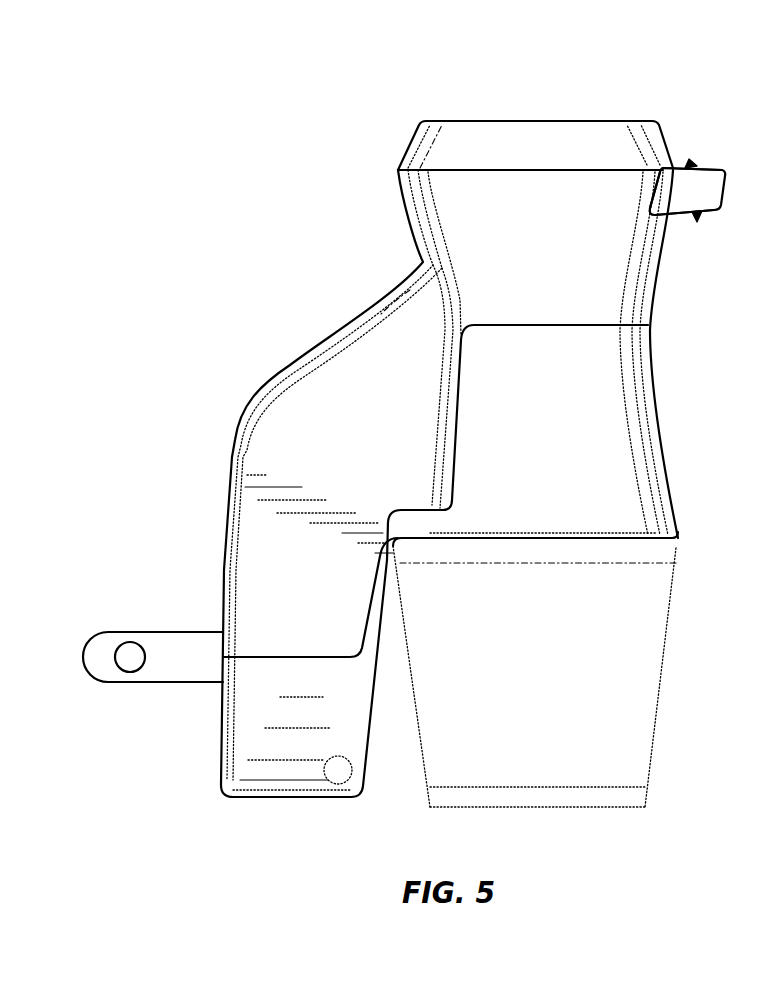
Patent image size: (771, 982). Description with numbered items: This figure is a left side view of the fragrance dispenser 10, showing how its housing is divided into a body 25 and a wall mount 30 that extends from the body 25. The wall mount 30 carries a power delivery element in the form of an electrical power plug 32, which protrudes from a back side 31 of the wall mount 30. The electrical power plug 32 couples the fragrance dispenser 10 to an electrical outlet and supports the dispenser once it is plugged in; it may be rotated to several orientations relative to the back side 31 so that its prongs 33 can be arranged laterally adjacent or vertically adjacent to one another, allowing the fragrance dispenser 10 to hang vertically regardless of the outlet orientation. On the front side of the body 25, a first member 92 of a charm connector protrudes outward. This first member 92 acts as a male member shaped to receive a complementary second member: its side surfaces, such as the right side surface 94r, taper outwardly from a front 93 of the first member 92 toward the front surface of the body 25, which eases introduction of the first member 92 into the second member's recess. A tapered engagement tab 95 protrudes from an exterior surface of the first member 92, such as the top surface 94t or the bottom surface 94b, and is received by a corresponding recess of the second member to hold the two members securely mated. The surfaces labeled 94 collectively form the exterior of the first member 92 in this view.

The fragrance dispenser 10 is at (329, 94).
The body 25 is at (605, 422).
The wall mount 30 is at (365, 340).
The back side 31 is at (260, 500).
The electrical power plug 32 is at (127, 689).
The prongs 33 is at (132, 632).
The first member 92 is at (710, 394).
The front 93 is at (724, 188).
The top surface 94t is at (713, 168).
The bottom surface 94b is at (710, 212).
The side surface 94r is at (680, 204).
The tab 94 is at (761, 618).
The tapered engagement tab 95 is at (707, 154).